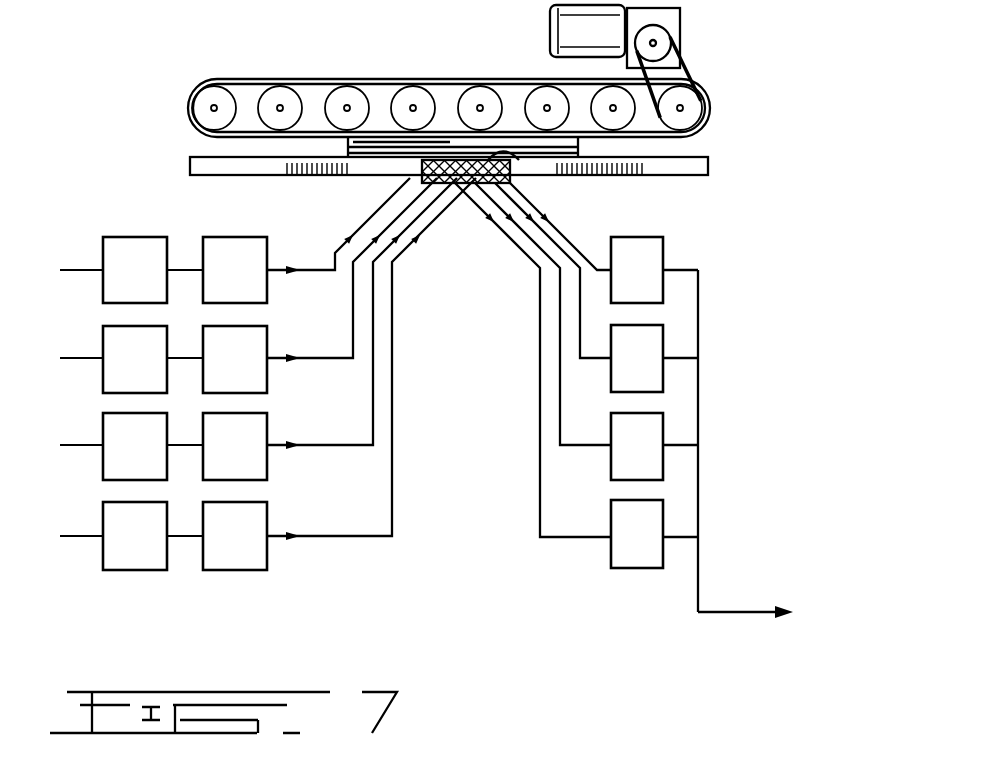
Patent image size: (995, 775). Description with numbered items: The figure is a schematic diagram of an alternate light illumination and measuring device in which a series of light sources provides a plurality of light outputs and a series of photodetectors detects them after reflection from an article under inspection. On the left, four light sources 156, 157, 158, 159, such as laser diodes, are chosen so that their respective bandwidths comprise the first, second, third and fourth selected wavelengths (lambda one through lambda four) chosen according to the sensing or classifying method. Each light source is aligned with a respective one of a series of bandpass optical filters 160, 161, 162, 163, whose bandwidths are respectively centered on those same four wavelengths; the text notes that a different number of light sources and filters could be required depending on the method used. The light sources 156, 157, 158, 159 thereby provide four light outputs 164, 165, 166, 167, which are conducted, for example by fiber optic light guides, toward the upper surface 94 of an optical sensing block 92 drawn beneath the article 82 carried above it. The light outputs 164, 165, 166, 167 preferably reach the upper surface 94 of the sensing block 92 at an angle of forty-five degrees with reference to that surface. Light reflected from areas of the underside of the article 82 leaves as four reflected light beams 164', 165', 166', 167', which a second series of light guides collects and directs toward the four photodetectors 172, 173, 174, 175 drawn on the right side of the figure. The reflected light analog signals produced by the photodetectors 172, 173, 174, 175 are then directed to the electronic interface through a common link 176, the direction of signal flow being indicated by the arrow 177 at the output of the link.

The article under inspection 82 is at (383, 147).
The optical sensing block 92 is at (490, 172).
The upper surface 94 is at (517, 160).
The light source 156 is at (127, 237).
The light source 157 is at (103, 340).
The light source 158 is at (103, 428).
The light source 159 is at (103, 515).
The bandpass optical filter 160 is at (230, 237).
The bandpass optical filter 161 is at (250, 326).
The bandpass optical filter 162 is at (250, 413).
The bandpass optical filter 163 is at (252, 502).
The light output 164 is at (338, 226).
The light output 165 is at (352, 268).
The light output 166 is at (368, 313).
The light output 167 is at (371, 359).
The reflected light beam 164' is at (527, 360).
The reflected light beam 165' is at (539, 314).
The reflected light beam 166' is at (605, 266).
The reflected light beam 167' is at (629, 226).
The photodetector 172 is at (640, 262).
The photodetector 173 is at (647, 342).
The photodetector 174 is at (647, 437).
The photodetector 175 is at (645, 522).
The link 176 is at (698, 587).
The arrow 177 is at (733, 615).